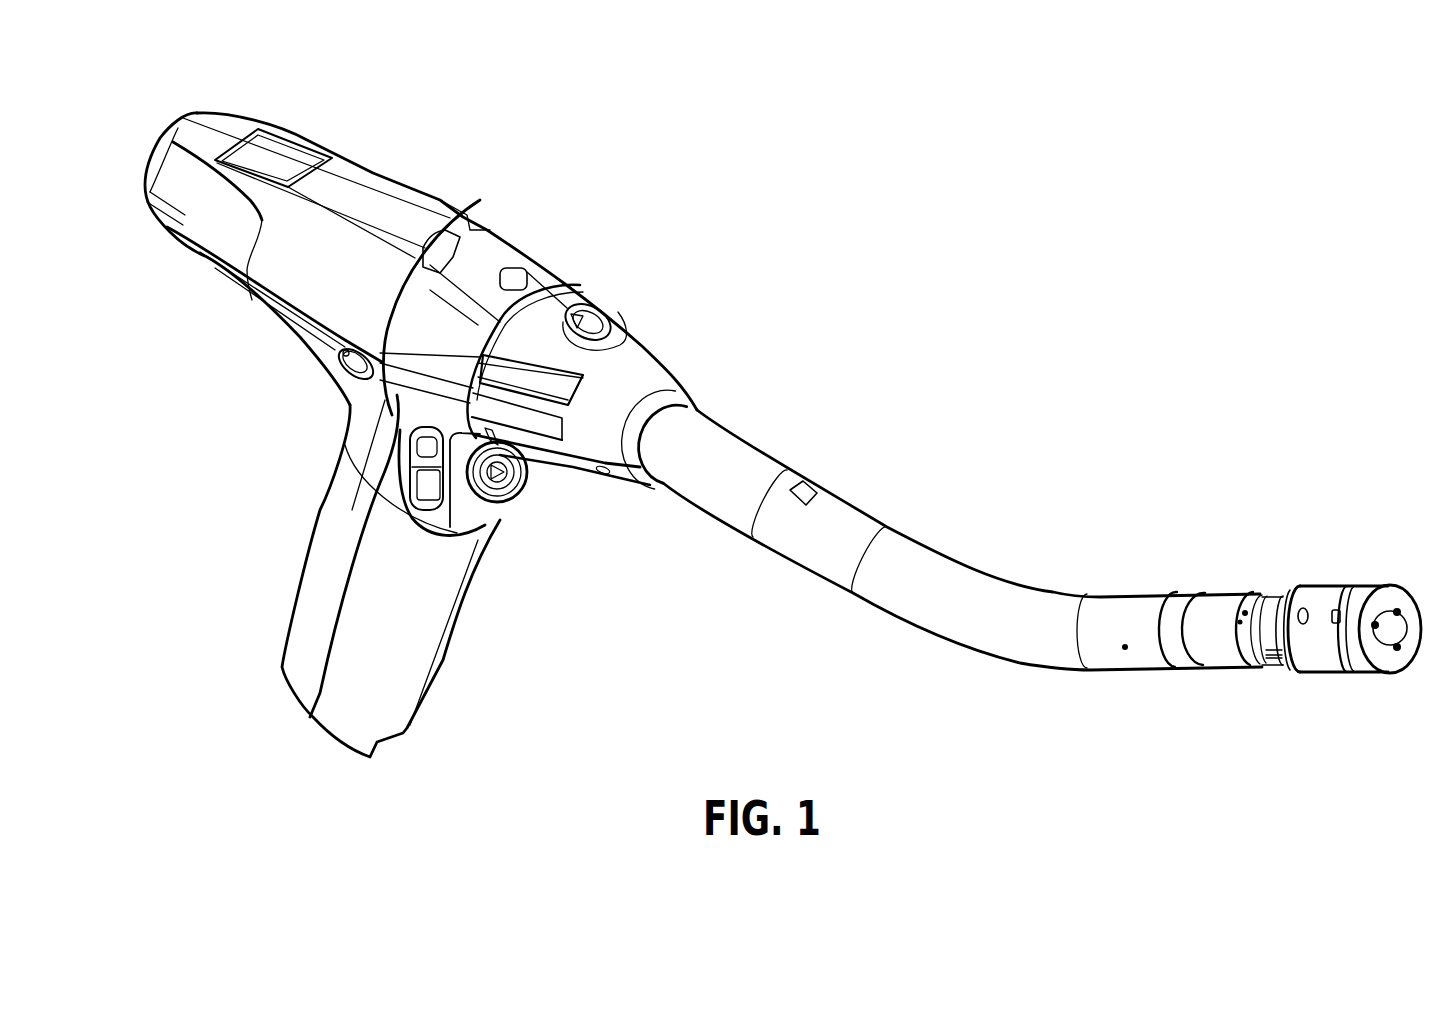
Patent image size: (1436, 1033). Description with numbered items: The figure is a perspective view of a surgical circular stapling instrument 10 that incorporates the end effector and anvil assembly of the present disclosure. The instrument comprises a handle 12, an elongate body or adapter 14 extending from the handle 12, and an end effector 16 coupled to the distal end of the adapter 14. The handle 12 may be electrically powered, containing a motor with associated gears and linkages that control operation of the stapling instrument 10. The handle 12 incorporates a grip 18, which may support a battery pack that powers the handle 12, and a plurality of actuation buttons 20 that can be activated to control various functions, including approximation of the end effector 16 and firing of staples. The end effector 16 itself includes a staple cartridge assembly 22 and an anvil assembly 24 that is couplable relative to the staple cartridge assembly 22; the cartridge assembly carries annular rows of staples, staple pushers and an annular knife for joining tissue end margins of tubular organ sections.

The circular stapling instrument 10 is at (718, 272).
The handle 12 is at (386, 140).
The elongate body or adapter 14 is at (820, 482).
The end effector 16 is at (1285, 565).
The grip 18 is at (417, 648).
The actuation buttons 20 is at (417, 450).
The staple cartridge assembly 22 is at (1310, 643).
The anvil assembly 24 is at (1397, 582).